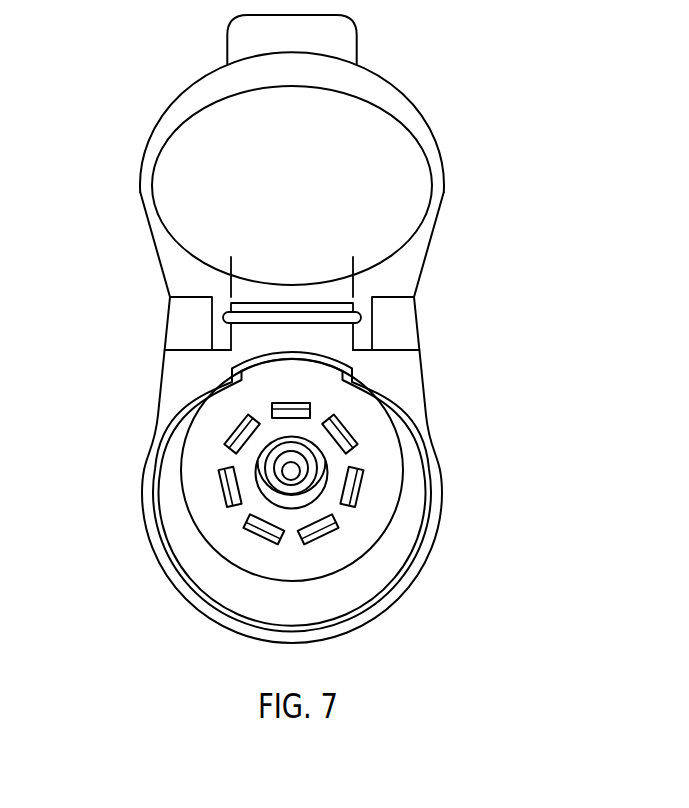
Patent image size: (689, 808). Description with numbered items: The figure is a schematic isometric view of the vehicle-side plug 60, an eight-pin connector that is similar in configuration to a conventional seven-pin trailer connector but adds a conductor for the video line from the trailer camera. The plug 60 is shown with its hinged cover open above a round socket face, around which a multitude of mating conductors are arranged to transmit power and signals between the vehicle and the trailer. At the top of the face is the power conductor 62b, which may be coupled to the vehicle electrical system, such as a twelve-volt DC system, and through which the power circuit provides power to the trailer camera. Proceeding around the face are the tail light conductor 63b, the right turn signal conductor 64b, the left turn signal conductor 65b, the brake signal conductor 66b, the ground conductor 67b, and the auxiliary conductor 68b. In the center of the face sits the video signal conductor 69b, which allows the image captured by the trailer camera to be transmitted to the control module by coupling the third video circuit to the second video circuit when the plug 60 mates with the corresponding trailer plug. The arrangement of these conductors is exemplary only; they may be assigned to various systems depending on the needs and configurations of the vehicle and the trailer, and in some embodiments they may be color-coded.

The vehicle plug 60 is at (148, 58).
The power conductor 62b is at (288, 405).
The tail light conductor 63b is at (229, 441).
The right turn signal conductor 64b is at (349, 435).
The left turn signal conductor 65b is at (231, 492).
The brake signal conductor 66b is at (358, 484).
The ground conductor 67b is at (262, 541).
The auxiliary conductor 68b is at (331, 532).
The video signal conductor 69b is at (300, 481).